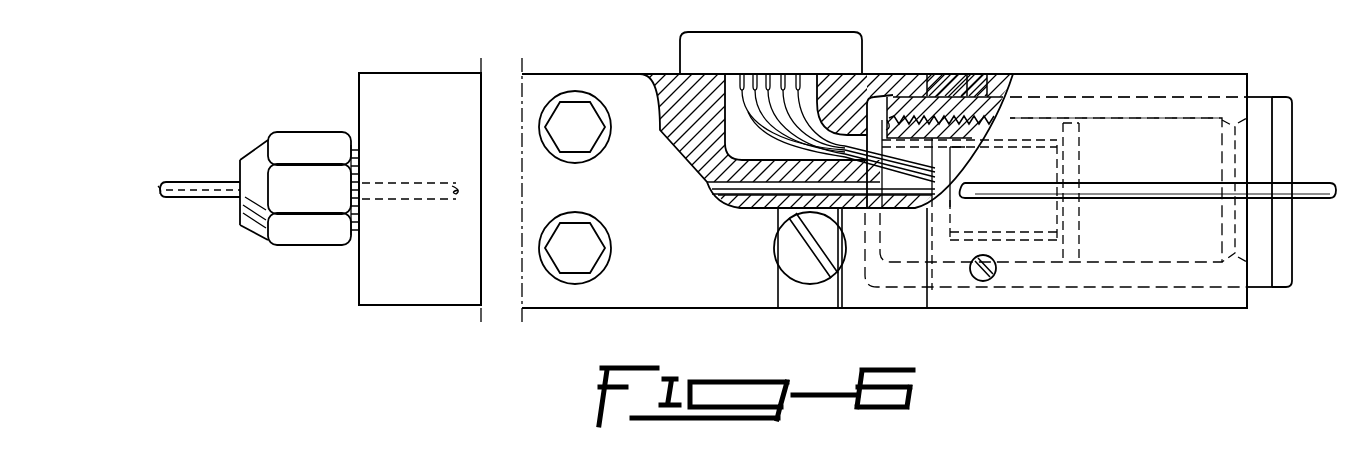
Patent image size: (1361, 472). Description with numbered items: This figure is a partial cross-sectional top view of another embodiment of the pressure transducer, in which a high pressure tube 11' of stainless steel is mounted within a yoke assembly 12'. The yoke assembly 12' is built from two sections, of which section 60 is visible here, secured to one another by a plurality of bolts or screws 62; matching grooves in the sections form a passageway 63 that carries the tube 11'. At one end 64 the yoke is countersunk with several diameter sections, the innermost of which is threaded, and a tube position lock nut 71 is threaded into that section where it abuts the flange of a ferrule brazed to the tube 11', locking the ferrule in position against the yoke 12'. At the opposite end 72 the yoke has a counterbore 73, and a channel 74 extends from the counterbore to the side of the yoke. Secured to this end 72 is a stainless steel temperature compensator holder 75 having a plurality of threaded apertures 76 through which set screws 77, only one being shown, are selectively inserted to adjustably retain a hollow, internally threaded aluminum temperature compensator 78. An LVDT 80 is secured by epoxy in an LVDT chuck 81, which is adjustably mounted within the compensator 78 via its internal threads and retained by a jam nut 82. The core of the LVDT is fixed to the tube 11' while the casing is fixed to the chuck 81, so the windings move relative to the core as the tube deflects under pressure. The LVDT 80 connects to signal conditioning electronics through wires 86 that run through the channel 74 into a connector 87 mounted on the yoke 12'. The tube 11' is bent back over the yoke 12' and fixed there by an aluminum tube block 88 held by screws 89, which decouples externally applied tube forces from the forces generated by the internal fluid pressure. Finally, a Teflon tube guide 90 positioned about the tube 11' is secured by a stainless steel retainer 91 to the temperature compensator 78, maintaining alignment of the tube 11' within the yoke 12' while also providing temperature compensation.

The high pressure tube 11' is at (196, 168).
The yoke assembly 12' is at (399, 270).
The yoke section 60 is at (596, 73).
The bolts or screws 62 is at (575, 145).
The passageway 63 is at (760, 192).
The yoke end 64 is at (357, 258).
The tube position lock nut 71 is at (296, 150).
The opposite yoke end 72 is at (931, 298).
The counterbore 73 is at (838, 104).
The channel 74 is at (735, 147).
The temperature compensator holder 75 is at (1180, 311).
The threaded apertures 76 is at (985, 90).
The set screws 77 is at (991, 281).
The temperature compensator 78 is at (907, 110).
The LVDT 80 is at (1025, 172).
The LVDT chuck 81 is at (1020, 132).
The jam nut 82 is at (881, 124).
The wires 86 is at (806, 122).
The connector 87 is at (778, 50).
The tube block 88 is at (820, 298).
The screws 89 is at (796, 256).
The tube guide 90 is at (1253, 100).
The retainer 91 is at (1278, 103).